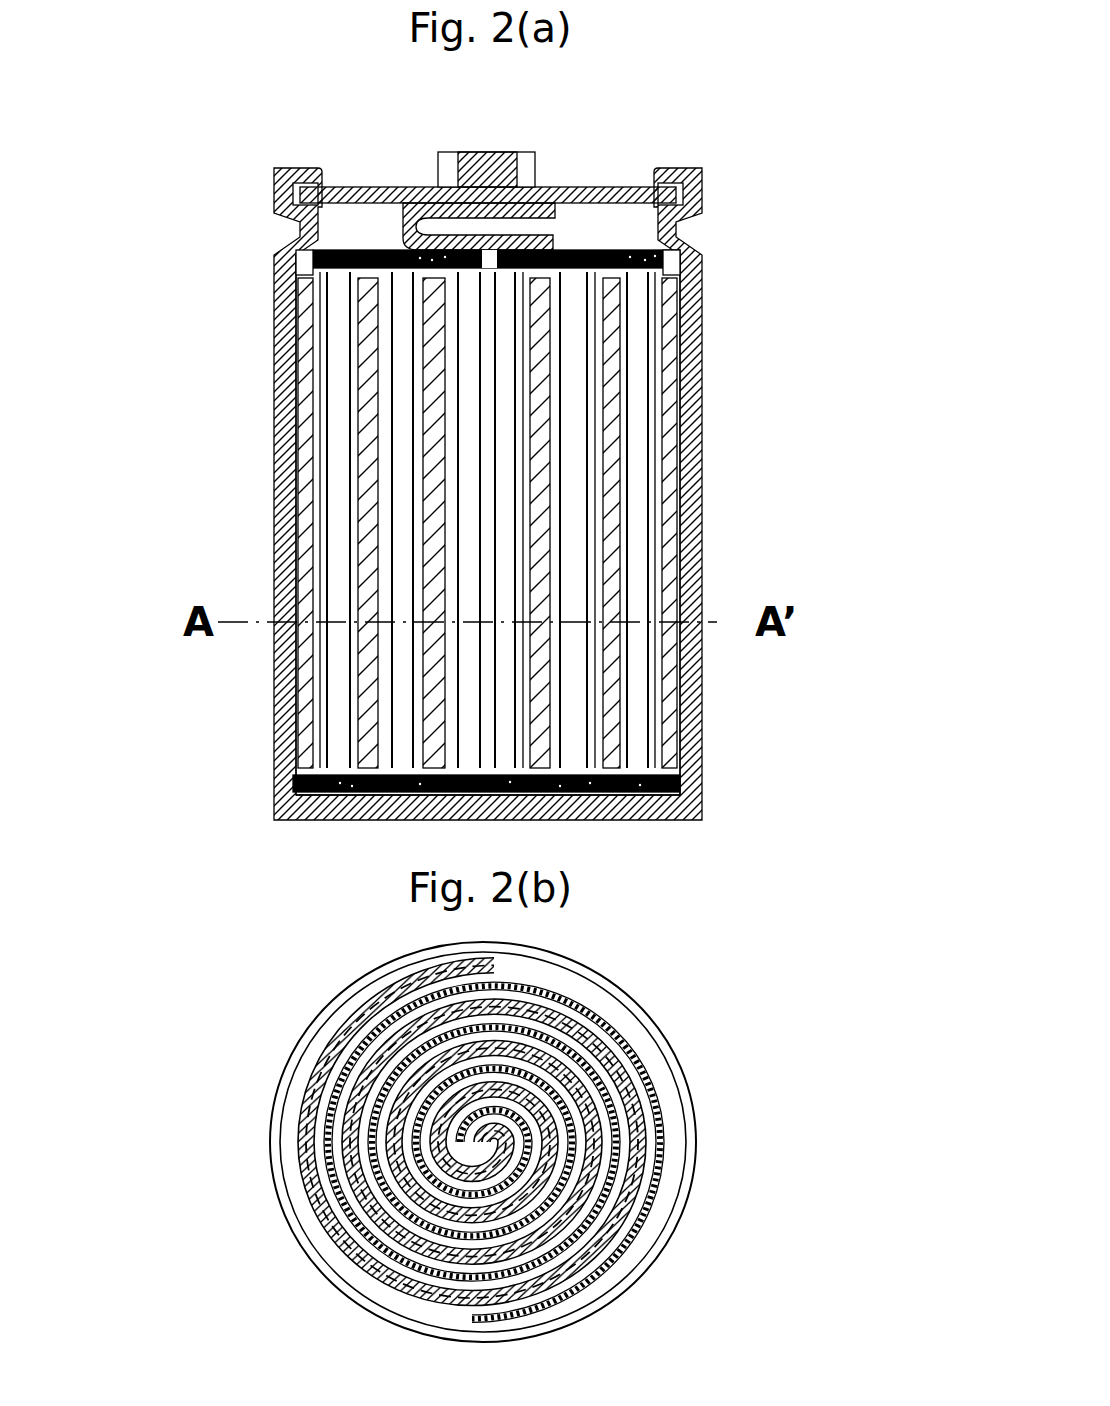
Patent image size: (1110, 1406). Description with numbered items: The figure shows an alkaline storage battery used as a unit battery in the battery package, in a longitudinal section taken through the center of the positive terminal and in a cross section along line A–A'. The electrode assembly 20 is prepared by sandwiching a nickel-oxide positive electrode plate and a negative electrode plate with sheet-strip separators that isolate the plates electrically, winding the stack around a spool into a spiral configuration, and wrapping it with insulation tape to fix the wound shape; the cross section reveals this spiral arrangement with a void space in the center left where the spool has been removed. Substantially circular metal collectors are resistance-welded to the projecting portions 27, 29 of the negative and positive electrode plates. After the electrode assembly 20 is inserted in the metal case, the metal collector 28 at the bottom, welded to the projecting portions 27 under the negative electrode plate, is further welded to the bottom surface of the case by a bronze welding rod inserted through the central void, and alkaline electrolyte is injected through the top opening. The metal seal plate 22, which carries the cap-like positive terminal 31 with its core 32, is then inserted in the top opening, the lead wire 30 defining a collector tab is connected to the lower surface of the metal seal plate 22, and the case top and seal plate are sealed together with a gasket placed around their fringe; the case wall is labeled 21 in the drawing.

The electrode assembly 20 is at (362, 488).
The battery can 21 is at (695, 242).
The metal seal plate 22 is at (400, 185).
The projecting portions 27 is at (673, 773).
The metal collector 28 is at (290, 786).
The projecting portions 29 is at (647, 272).
The lead wire 30 is at (548, 207).
The positive terminal 31 is at (477, 147).
The terminal core 32 is at (497, 173).